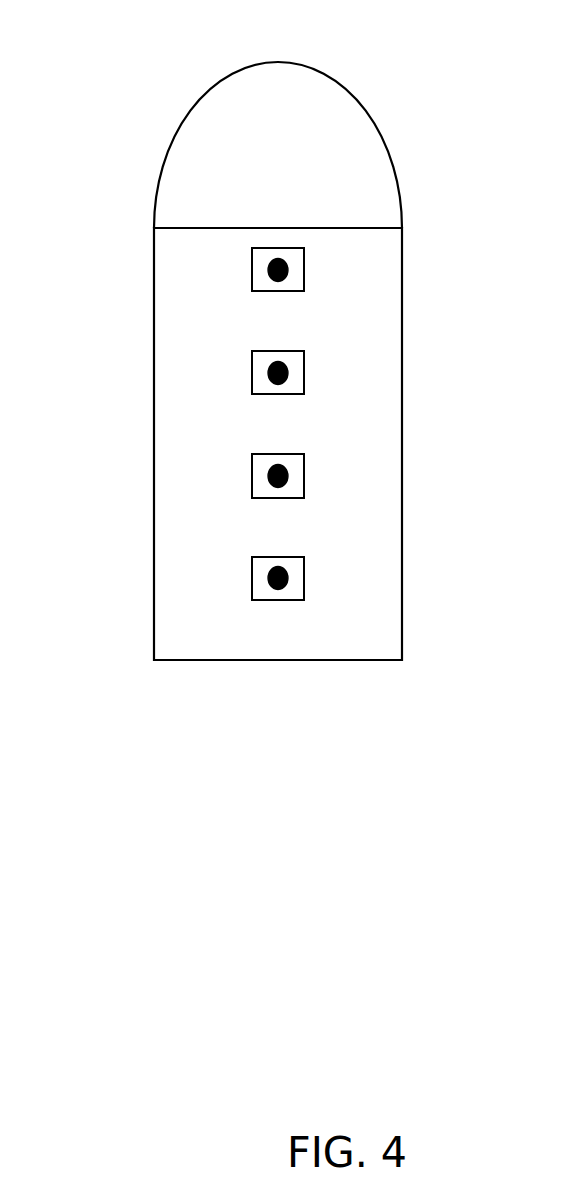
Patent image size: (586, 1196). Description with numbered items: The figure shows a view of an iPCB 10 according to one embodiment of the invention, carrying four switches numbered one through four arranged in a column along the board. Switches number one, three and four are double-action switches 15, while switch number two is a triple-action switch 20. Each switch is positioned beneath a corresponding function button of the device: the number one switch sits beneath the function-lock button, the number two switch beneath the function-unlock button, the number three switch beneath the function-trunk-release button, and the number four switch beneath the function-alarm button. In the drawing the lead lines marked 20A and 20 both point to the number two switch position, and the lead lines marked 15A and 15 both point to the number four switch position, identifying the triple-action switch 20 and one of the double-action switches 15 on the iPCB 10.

The iPCB 10 is at (185, 100).
The second indicator box 20A is at (272, 368).
The triple-action switch 20 is at (305, 368).
The fourth indicator box 15A is at (272, 574).
The double-action switch 15 is at (305, 574).